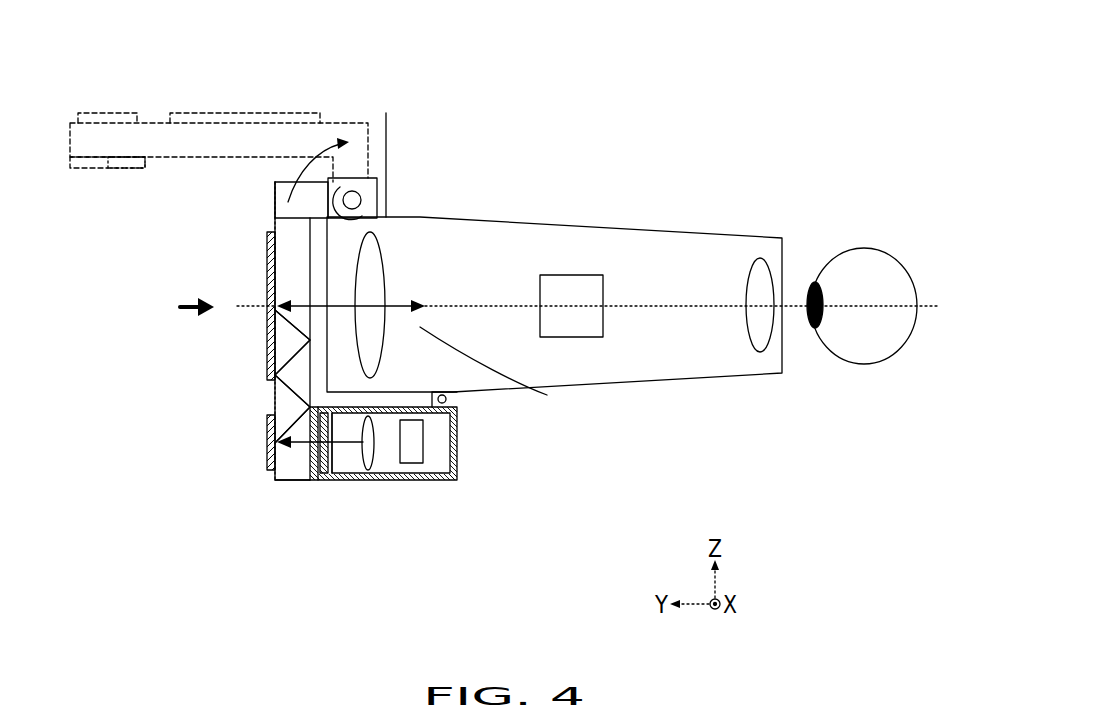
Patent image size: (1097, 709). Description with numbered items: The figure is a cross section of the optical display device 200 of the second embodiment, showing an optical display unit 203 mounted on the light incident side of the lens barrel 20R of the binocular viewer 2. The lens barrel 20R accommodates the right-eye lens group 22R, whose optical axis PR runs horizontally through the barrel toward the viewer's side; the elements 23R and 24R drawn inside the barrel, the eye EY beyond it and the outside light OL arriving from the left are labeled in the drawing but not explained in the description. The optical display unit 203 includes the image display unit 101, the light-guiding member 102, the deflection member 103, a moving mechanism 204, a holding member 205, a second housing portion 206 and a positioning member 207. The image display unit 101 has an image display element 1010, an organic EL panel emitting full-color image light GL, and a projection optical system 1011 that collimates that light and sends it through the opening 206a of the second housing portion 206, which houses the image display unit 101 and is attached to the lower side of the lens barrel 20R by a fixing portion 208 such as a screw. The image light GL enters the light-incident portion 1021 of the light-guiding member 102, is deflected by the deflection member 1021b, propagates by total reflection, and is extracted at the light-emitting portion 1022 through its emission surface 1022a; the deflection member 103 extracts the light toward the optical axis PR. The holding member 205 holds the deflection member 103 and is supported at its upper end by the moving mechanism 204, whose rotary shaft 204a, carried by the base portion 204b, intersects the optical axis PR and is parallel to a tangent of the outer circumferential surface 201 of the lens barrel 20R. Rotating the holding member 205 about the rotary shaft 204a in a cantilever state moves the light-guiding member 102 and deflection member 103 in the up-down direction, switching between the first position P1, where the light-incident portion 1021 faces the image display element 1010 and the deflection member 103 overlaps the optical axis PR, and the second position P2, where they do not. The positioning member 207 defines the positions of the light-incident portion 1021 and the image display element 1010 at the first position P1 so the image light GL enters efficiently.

The optical display device 200 is at (761, 170).
The binocular viewer 2 is at (679, 216).
The lens barrel 20R is at (630, 384).
The outer circumferential surface 201 is at (390, 217).
The right-eye lens group 22R is at (566, 318).
The projection lens 23R is at (377, 262).
The eyepiece lens 24R is at (757, 338).
The image light GL is at (493, 380).
The eye EY is at (863, 364).
The optical axis PR is at (928, 305).
The outside light OL is at (188, 312).
The holding member 205 is at (285, 187).
The second position P2 is at (307, 97).
The moving mechanism 204 is at (470, 30).
The rotary shaft 204a is at (352, 192).
The base portion 204b is at (386, 113).
The light-guiding member 102 is at (280, 226).
The light-emitting portion 1022 is at (290, 288).
The emission surface 1022a is at (310, 283).
The light-incident portion 1021 is at (288, 473).
The deflection member 1021b is at (270, 432).
The deflection member 103 is at (266, 251).
The optical display unit 203 is at (188, 250).
The first position P1 is at (272, 495).
The second housing portion 206 is at (457, 455).
The opening 206a is at (338, 458).
The positioning member 207 is at (308, 472).
The fixing portion 208 is at (446, 402).
The image display unit 101 is at (493, 553).
The projection optical system 1011 is at (370, 458).
The image display element 1010 is at (413, 460).